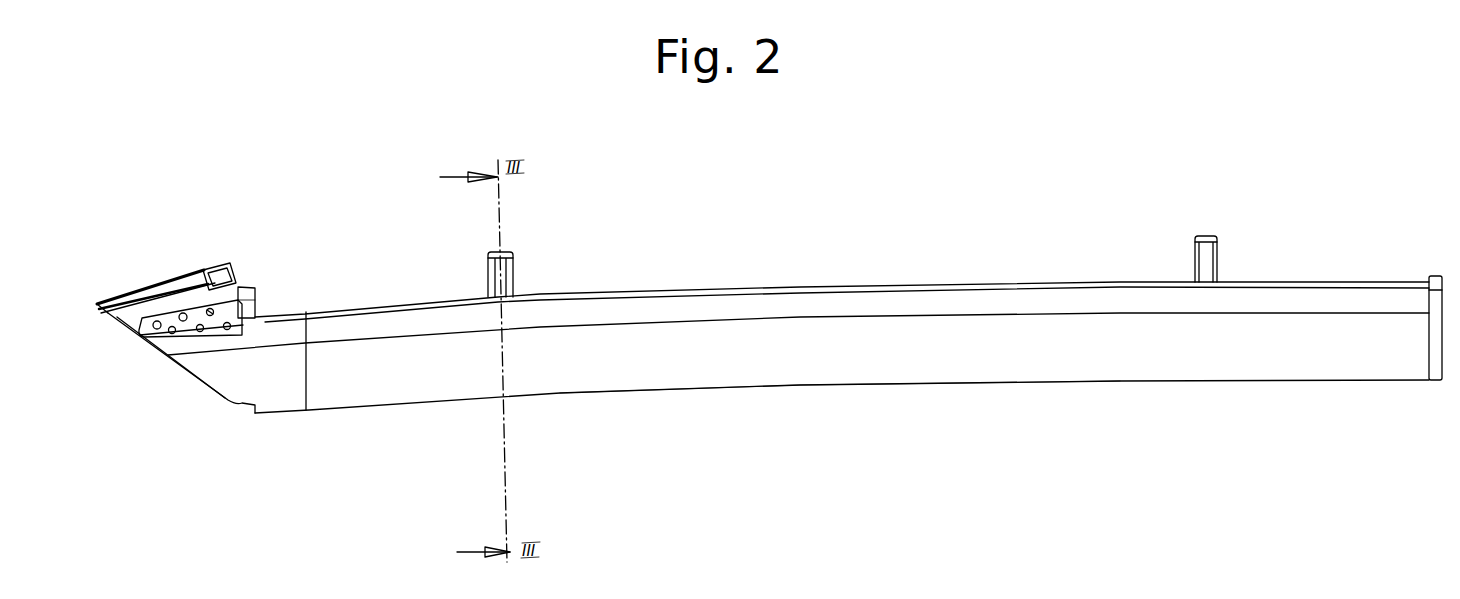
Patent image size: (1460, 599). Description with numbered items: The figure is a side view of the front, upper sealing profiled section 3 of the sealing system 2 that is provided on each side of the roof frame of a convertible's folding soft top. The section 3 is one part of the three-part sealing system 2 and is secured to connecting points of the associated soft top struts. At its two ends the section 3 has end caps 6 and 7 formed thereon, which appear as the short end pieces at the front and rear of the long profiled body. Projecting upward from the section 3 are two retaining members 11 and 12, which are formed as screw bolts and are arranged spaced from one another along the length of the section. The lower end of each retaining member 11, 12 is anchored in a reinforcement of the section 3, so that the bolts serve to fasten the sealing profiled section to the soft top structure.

The sealing system 2 is at (1082, 384).
The front, upper sealing profiled section 3 is at (830, 386).
The end cap 6 is at (277, 412).
The end cap 7 is at (1433, 382).
The retaining member 11 is at (512, 260).
The retaining member 12 is at (1219, 240).